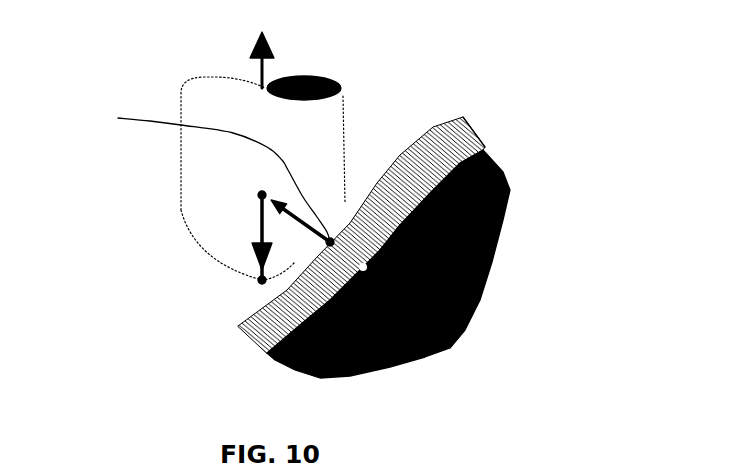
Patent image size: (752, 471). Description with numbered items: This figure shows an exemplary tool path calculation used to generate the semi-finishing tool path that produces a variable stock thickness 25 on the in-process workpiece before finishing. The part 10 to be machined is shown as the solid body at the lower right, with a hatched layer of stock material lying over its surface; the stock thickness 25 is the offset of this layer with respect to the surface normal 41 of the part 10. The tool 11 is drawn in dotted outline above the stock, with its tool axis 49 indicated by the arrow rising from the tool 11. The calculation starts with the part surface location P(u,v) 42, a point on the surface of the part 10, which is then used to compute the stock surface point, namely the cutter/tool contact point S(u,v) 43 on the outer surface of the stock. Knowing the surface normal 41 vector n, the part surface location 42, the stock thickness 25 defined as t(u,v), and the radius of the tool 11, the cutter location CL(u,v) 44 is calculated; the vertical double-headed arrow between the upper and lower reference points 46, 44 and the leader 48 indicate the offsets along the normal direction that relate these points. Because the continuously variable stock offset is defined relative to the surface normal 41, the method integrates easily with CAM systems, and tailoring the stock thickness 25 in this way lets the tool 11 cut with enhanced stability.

The part 10 is at (500, 160).
The tool 11 is at (180, 110).
The stock thickness 25 is at (470, 128).
The surface normal 41 is at (202, 175).
The P(u,v) part surface location 42 is at (363, 267).
The S(u,v) cutter/tool contact point 43 is at (330, 242).
The CL(u,v) cutter location 44 is at (262, 280).
The upper reference point 46 is at (262, 195).
The hatched layer 48 is at (420, 132).
The tool axis 49 is at (257, 47).